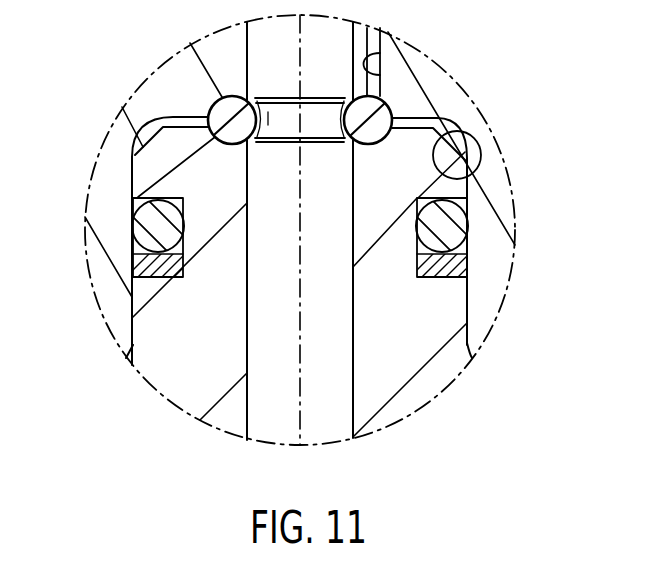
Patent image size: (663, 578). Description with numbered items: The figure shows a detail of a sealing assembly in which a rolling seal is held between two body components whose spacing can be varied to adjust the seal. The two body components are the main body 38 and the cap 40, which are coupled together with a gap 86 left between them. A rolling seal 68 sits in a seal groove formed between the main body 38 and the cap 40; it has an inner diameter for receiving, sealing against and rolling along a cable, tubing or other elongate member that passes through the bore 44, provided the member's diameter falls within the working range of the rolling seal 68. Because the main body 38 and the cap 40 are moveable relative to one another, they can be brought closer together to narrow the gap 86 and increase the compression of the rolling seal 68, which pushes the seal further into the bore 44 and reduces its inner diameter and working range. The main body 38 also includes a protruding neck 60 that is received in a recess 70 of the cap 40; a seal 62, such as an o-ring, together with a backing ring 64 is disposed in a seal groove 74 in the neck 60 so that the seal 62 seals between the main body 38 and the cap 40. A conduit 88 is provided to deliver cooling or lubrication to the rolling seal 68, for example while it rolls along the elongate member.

The main body 38 is at (177, 390).
The cap 40 is at (166, 74).
The bore 44 is at (247, 293).
The neck 60 is at (145, 128).
The seal 62 is at (138, 220).
The backing ring 64 is at (138, 266).
The rolling seal 68 is at (256, 112).
The recess 70 is at (466, 177).
The seal groove 74 is at (176, 278).
The gap 86 is at (178, 117).
The conduit 88 is at (380, 74).